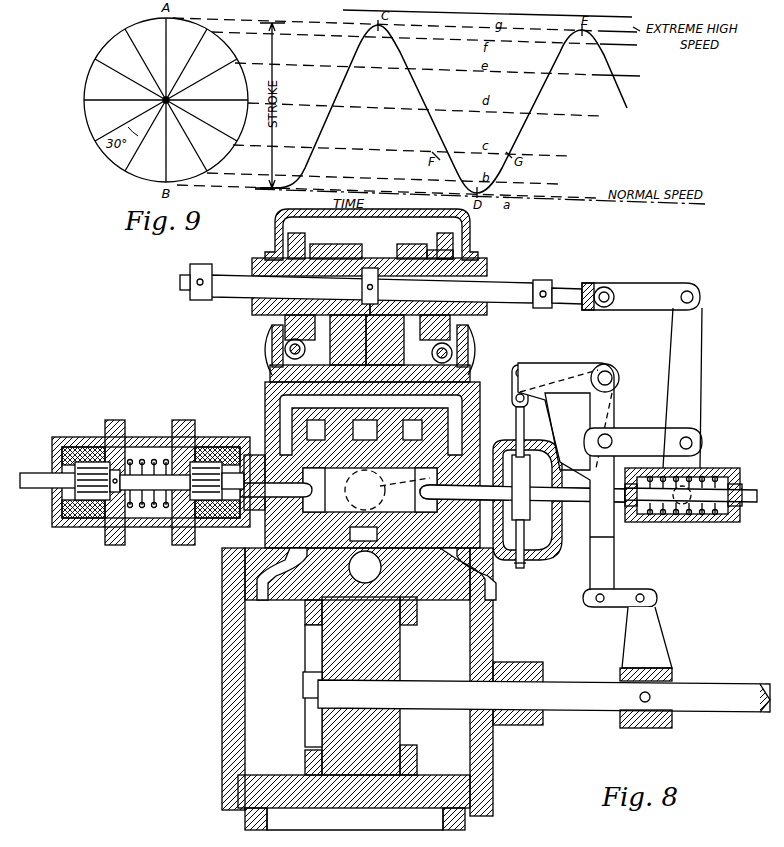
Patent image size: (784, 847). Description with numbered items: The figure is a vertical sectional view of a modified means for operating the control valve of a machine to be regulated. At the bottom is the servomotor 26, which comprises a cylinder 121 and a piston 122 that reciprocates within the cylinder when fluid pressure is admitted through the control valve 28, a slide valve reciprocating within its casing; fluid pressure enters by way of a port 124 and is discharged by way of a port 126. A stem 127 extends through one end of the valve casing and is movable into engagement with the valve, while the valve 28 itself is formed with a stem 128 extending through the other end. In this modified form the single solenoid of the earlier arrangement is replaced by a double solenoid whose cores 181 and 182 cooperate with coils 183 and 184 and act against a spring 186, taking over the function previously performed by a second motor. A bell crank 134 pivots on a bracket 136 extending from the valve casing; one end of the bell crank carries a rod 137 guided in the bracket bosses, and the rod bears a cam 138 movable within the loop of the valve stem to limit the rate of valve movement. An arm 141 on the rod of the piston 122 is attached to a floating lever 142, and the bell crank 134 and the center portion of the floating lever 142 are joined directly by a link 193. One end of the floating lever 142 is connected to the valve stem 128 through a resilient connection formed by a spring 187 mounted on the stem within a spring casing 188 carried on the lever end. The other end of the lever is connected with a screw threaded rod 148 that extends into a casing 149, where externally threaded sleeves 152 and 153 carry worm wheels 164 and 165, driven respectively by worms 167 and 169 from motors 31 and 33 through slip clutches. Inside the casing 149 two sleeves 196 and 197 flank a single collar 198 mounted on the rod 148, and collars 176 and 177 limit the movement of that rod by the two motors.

The servomotor 26 is at (446, 753).
The control valve 28 is at (305, 520).
The motor 31 is at (268, 335).
The motor 33 is at (474, 338).
The cylinder 121 is at (340, 804).
The piston 122 is at (305, 648).
The port 124 is at (365, 567).
The port 126 is at (445, 485).
The stem 127 is at (296, 482).
The valve stem 128 is at (436, 498).
The bell crank 134 is at (568, 364).
The bracket 136 is at (512, 408).
The rod 137 is at (520, 570).
The cam 138 is at (532, 462).
The arm 141 is at (660, 640).
The floating lever 142 is at (702, 360).
The screw threaded rod 148 is at (588, 283).
The casing 149 is at (268, 399).
The externally threaded sleeve 152 is at (258, 305).
The externally threaded sleeve 153 is at (486, 308).
The worm wheel 164 is at (302, 240).
The worm wheel 165 is at (440, 244).
The worm 167 is at (285, 350).
The worm 169 is at (452, 353).
The collar 176 is at (200, 264).
The collar 177 is at (543, 280).
The solenoid core 181 is at (72, 488).
The solenoid core 182 is at (250, 462).
The coil 183 is at (78, 518).
The coil 184 is at (214, 518).
The spring 186 is at (165, 498).
The spring 187 is at (662, 522).
The spring casing 188 is at (733, 465).
The link 193 is at (650, 426).
The sleeve 196 is at (350, 318).
The sleeve 197 is at (382, 322).
The collar 198 is at (370, 266).